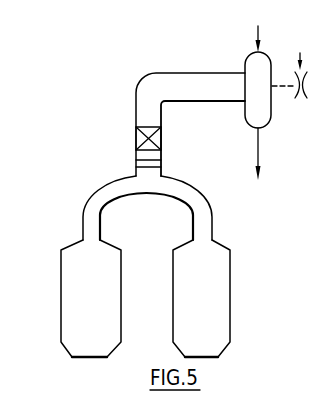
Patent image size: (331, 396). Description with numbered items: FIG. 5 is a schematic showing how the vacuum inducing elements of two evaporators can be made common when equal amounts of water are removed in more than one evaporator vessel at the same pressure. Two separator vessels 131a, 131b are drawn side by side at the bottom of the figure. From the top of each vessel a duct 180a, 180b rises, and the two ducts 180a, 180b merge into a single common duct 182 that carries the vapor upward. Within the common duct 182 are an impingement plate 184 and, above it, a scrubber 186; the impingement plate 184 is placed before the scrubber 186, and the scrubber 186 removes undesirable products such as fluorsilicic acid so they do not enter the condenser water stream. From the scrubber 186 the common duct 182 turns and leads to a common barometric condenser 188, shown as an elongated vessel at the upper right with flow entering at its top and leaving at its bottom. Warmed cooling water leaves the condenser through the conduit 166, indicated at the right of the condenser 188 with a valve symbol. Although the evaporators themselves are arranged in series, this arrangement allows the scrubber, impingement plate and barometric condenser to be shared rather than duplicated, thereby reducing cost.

The common barometric condenser 188 is at (274, 57).
The conduit 166 is at (305, 83).
The common duct 182 is at (163, 176).
The scrubber 186 is at (137, 138).
The impingement plate 184 is at (137, 161).
The duct 180a is at (98, 194).
The duct 180b is at (212, 207).
The evaporator vessel 131a is at (58, 272).
The evaporator vessel 131b is at (173, 278).